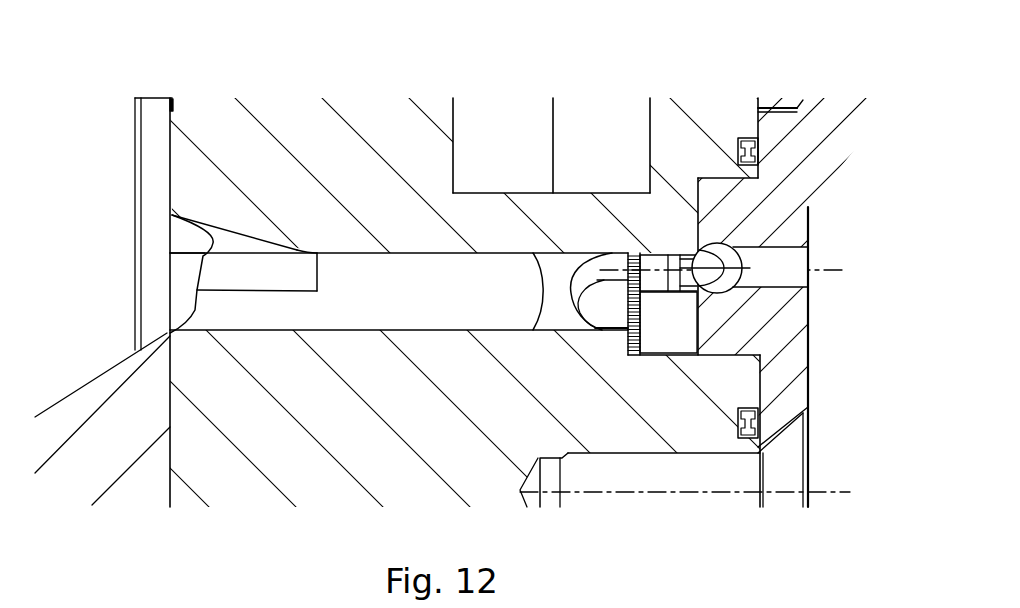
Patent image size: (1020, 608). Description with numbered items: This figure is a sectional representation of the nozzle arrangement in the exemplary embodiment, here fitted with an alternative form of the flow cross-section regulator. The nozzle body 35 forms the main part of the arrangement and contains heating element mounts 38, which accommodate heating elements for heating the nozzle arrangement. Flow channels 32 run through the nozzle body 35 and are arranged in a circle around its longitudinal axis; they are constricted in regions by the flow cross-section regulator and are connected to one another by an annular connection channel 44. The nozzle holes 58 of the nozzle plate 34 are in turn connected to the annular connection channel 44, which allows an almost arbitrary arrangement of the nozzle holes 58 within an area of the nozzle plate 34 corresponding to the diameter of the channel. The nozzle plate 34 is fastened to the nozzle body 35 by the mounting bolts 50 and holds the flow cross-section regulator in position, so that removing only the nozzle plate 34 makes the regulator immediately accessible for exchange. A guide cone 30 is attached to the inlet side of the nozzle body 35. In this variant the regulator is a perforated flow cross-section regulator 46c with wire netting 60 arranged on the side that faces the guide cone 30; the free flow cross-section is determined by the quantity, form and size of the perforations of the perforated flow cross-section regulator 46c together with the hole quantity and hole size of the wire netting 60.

The guide cone 30 is at (93, 476).
The flow channel 32 is at (213, 315).
The nozzle plate 34 is at (813, 150).
The nozzle body 35 is at (667, 145).
The heating element mount 38 is at (488, 152).
The annular connection channel 44 is at (730, 250).
The perforated flow cross-section regulator 46c is at (683, 340).
The mounting bolt 50 is at (783, 458).
The nozzle hole 58 is at (826, 282).
The wire netting 60 is at (630, 355).